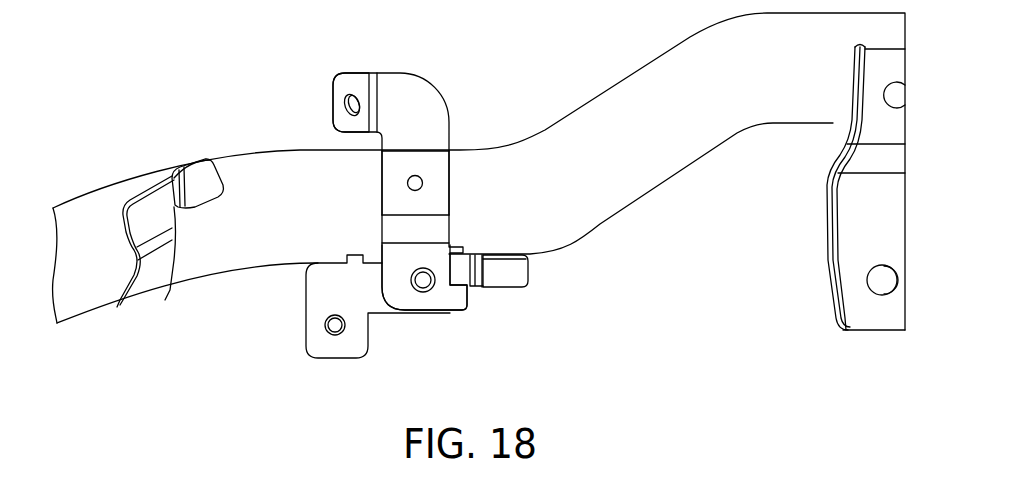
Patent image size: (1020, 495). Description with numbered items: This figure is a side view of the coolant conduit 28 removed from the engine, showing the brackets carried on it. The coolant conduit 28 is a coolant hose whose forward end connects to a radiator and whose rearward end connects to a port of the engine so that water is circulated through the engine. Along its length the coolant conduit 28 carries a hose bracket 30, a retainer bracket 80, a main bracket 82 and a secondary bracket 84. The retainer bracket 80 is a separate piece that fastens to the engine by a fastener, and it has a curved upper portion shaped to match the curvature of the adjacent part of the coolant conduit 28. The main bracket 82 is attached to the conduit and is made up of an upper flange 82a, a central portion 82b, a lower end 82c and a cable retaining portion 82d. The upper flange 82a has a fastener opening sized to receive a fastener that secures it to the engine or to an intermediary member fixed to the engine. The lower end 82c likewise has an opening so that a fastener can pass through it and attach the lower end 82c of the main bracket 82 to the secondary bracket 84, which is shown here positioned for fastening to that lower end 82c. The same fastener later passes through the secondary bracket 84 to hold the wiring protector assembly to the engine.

The coolant conduit 28 is at (628, 168).
The hose bracket 30 is at (152, 273).
The retainer bracket 80 is at (867, 203).
The main bracket 82 is at (412, 107).
The upper flange 82a is at (350, 85).
The central portion 82b is at (428, 198).
The lower end 82c is at (442, 288).
The cable retaining portion 82d is at (505, 273).
The secondary bracket 84 is at (325, 297).